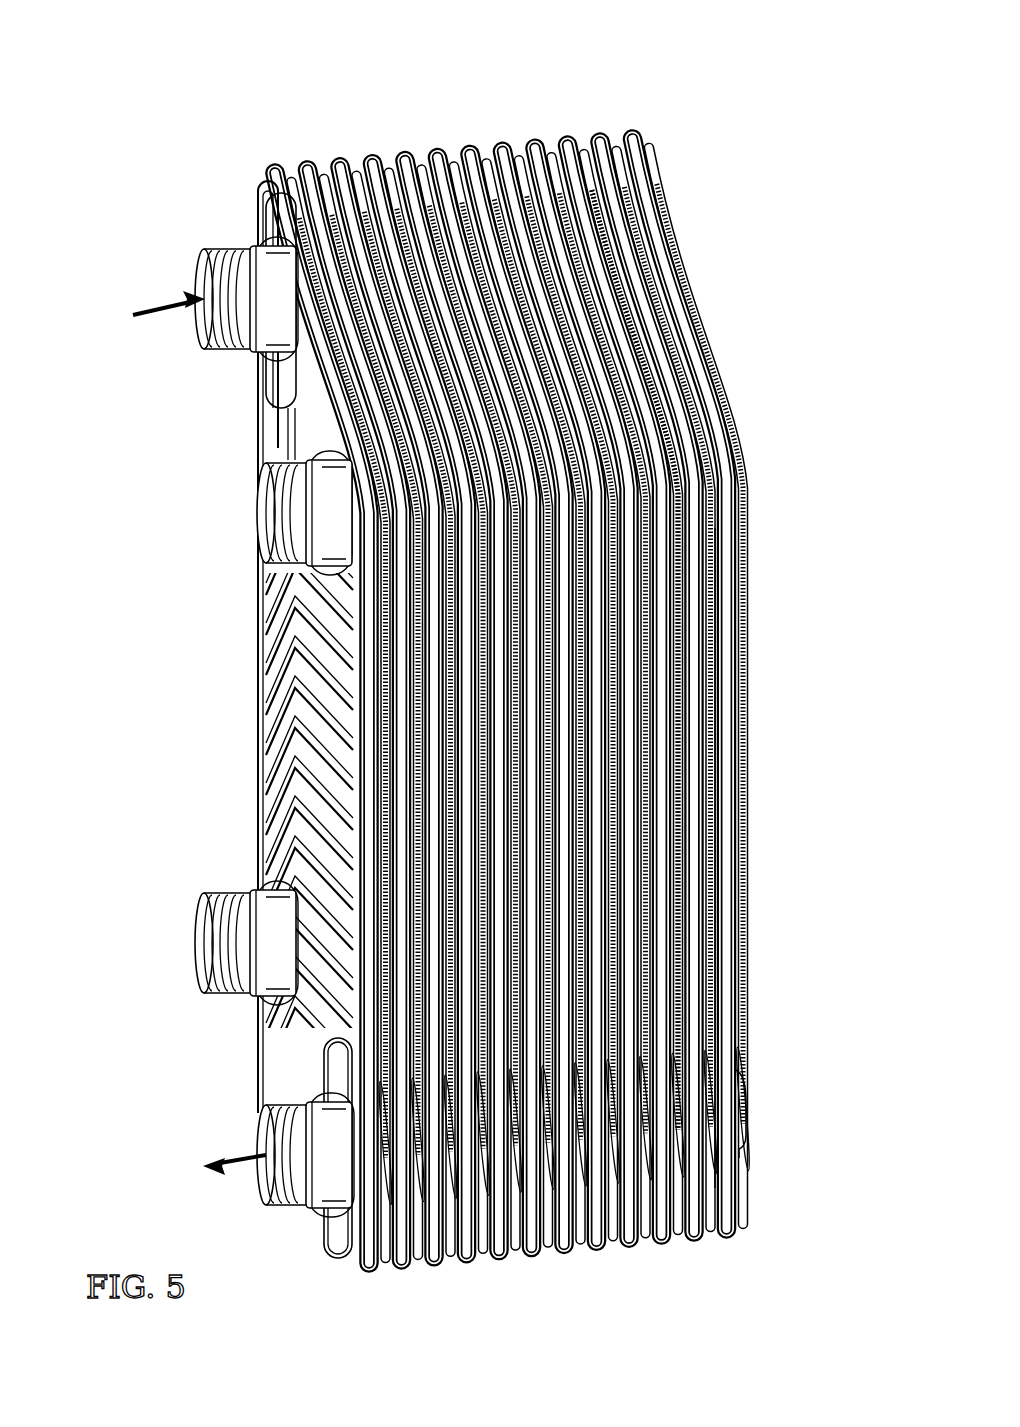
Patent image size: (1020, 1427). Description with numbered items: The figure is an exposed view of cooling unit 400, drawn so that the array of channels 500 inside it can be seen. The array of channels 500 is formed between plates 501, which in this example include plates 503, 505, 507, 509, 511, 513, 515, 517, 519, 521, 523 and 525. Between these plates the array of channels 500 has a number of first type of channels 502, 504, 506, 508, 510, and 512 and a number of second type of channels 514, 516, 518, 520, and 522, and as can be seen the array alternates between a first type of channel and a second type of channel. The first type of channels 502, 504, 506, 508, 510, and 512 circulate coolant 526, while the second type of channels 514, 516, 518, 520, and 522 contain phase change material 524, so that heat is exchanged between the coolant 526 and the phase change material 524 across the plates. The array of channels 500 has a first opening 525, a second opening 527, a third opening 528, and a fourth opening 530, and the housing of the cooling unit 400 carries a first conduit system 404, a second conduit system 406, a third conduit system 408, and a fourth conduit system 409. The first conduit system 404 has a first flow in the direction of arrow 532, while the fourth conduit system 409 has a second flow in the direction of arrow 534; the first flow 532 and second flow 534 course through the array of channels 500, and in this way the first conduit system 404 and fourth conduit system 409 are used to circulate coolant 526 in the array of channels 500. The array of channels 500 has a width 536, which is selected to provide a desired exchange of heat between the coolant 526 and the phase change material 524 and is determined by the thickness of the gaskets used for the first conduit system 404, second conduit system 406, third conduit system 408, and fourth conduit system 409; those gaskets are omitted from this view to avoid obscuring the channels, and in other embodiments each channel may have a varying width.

The cooling unit 400 is at (453, 677).
The array of channels 500 is at (523, 677).
The plates 501 is at (748, 1160).
The first type of channel 502 is at (277, 140).
The plate 503 is at (350, 1258).
The first type of channel 504 is at (341, 134).
The plate 505 is at (385, 1262).
The first type of channel 506 is at (407, 129).
The plate 507 is at (420, 1260).
The first type of channel 508 is at (472, 123).
The plate 509 is at (452, 1258).
The first type of channel 510 is at (537, 114).
The plate 511 is at (487, 1256).
The first type of channel 512 is at (628, 115).
The plate 513 is at (518, 1253).
The second type of channel 514 is at (310, 136).
The plate 515 is at (551, 1250).
The second type of channel 516 is at (373, 131).
The plate 517 is at (583, 1248).
The second type of channel 518 is at (439, 127).
The plate 519 is at (618, 1246).
The second type of channel 520 is at (506, 116).
The plate 521 is at (652, 1243).
The second type of channel 522 is at (571, 113).
The plate 523 is at (697, 1240).
The phase change material 524 is at (672, 820).
The first opening 525 is at (270, 230).
The coolant 526 is at (703, 703).
The second opening 527 is at (330, 440).
The third opening 528 is at (280, 882).
The fourth opening 530 is at (330, 1090).
The arrow 532 is at (153, 293).
The arrow 534 is at (250, 1140).
The width 536 is at (606, 112).
The first conduit system 404 is at (195, 327).
The second conduit system 406 is at (258, 522).
The third conduit system 408 is at (193, 950).
The fourth conduit system 409 is at (252, 1172).